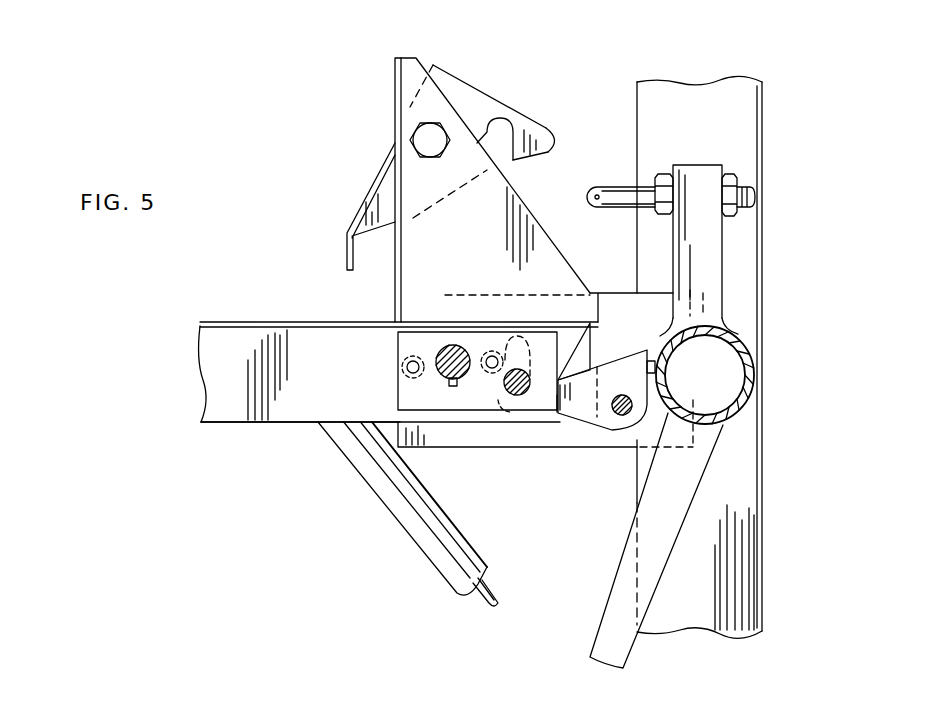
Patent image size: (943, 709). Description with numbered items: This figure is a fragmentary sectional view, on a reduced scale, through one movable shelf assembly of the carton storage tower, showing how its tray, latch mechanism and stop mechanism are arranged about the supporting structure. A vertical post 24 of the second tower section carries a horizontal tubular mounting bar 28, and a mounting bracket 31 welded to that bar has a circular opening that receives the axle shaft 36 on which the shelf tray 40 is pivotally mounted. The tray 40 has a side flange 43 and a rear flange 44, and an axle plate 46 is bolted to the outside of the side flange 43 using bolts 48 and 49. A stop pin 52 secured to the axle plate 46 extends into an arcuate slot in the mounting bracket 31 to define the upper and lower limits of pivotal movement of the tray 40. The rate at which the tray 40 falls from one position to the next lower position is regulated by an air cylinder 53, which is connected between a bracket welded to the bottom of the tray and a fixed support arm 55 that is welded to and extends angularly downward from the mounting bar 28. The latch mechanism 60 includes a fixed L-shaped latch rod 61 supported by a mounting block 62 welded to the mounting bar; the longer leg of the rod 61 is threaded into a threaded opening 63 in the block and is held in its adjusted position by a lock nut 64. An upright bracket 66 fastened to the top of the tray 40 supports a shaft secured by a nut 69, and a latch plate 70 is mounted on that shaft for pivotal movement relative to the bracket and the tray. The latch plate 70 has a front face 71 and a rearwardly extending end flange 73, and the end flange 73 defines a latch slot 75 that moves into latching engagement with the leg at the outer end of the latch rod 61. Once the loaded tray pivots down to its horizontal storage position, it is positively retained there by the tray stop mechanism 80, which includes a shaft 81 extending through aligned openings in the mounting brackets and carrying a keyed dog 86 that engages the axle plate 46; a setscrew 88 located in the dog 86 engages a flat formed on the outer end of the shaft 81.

The vertical post 24 is at (763, 146).
The mounting bar 28 is at (747, 337).
The mounting bracket 31 is at (575, 448).
The axle shaft 36 is at (449, 348).
The shelf tray 40 is at (266, 322).
The side flange 43 is at (246, 410).
The rear flange 44 is at (600, 336).
The axle plate 46 is at (533, 424).
The bolt 48 is at (407, 362).
The bolt 49 is at (491, 355).
The stop pin 52 is at (510, 396).
The air cylinder 53 is at (385, 490).
The fixed support arm 55 is at (628, 558).
The latch mechanism 60 is at (510, 85).
The latch rod 61 is at (596, 191).
The mounting block 62 is at (723, 258).
The threaded opening 63 is at (661, 174).
The lock nut 64 is at (734, 213).
The upright bracket 66 is at (394, 72).
The nut 69 is at (428, 137).
The latch plate 70 is at (464, 82).
The front face 71 is at (372, 185).
The end flange 73 is at (533, 120).
The latch slot 75 is at (502, 138).
The tray stop mechanism 80 is at (652, 422).
The shaft 81 is at (630, 413).
The dog 86 is at (605, 432).
The setscrew 88 is at (656, 366).